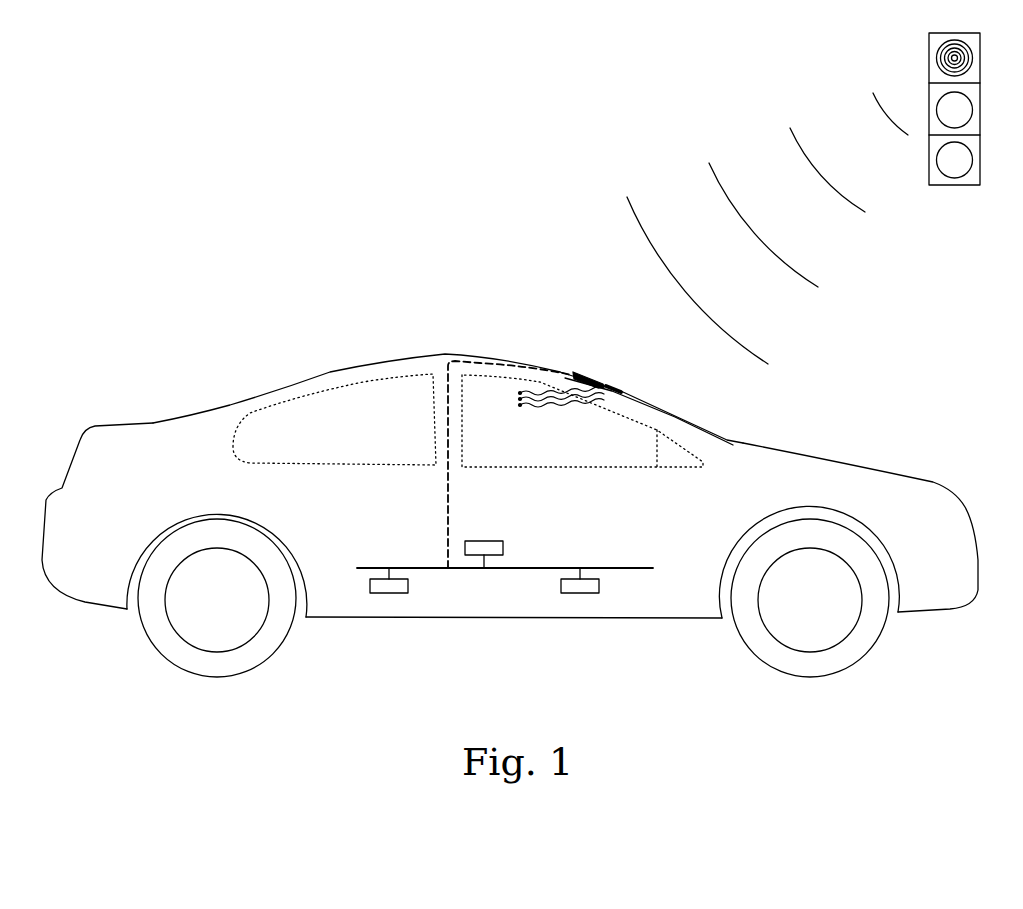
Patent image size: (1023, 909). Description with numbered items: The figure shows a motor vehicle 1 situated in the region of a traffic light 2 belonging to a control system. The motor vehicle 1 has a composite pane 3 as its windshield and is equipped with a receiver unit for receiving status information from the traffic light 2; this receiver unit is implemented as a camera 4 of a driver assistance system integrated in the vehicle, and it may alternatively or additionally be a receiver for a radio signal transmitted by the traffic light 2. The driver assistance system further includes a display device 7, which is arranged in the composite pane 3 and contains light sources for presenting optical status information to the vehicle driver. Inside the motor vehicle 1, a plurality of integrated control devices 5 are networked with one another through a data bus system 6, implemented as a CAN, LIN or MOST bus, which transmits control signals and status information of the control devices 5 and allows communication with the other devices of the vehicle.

The motor vehicle 1 is at (446, 338).
The traffic light 2 is at (926, 68).
The composite pane 3 is at (677, 410).
The camera 4 is at (593, 377).
The control devices 5 is at (493, 538).
The data bus system 6 is at (443, 517).
The display device 7 is at (618, 387).